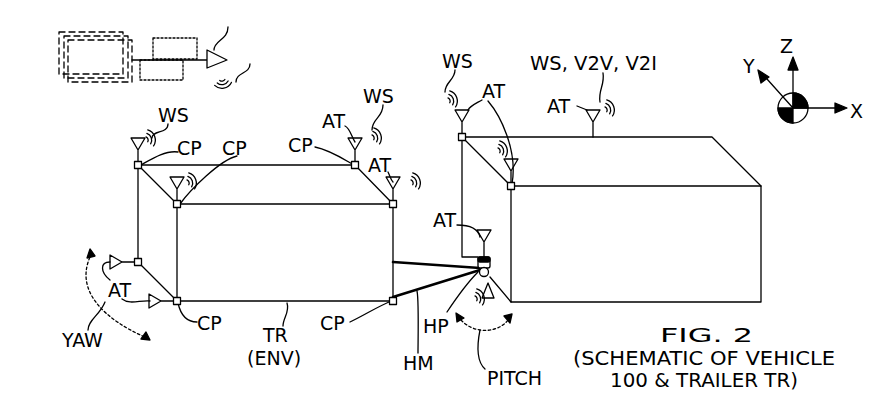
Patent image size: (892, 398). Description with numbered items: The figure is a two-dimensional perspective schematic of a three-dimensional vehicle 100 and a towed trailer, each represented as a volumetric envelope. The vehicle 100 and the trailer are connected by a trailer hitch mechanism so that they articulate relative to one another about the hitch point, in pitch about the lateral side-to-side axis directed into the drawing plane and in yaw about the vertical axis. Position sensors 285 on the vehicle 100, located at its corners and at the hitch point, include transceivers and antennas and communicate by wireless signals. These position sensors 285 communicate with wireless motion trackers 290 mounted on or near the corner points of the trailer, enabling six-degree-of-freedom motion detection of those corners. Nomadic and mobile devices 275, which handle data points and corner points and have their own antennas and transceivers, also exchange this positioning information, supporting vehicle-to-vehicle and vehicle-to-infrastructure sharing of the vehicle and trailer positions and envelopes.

The nomadic and mobile devices 275 is at (108, 33).
The wireless motion trackers 290 is at (174, 204).
The position sensors 285 is at (507, 184).
The vehicle 100 is at (680, 135).